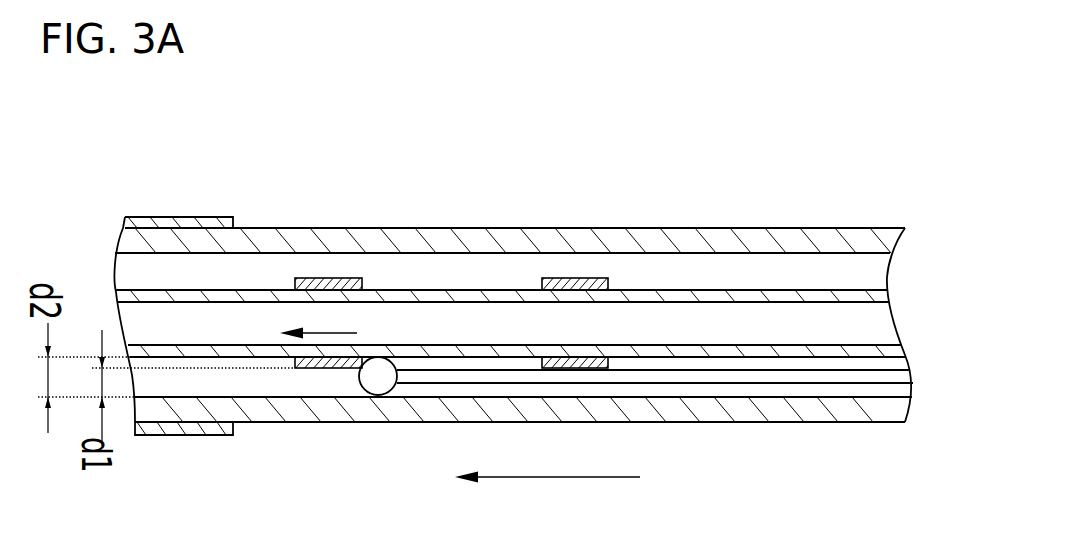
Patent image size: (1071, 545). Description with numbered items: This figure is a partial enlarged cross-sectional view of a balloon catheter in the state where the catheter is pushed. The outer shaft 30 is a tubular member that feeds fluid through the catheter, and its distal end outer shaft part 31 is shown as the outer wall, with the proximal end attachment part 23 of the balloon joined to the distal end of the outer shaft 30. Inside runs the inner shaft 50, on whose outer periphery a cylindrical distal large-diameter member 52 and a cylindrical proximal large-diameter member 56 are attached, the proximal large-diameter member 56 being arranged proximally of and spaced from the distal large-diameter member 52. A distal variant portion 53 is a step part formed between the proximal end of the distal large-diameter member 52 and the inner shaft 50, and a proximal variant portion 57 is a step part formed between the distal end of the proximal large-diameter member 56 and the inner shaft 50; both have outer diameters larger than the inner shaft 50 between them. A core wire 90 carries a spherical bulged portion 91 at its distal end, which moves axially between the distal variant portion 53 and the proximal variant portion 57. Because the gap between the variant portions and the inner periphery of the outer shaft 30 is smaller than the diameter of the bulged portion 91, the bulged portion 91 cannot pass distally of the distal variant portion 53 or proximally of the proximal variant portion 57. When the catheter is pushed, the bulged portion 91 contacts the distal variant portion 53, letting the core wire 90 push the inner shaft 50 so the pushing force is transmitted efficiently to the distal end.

The proximal end attachment part 23 is at (203, 217).
The outer shaft 30 is at (827, 228).
The distal end outer shaft part 31 is at (843, 422).
The inner shaft 50 is at (709, 290).
The distal large-diameter member 52 is at (310, 278).
The distal variant portion 53 is at (365, 287).
The proximal large-diameter member 56 is at (577, 277).
The proximal variant portion 57 is at (540, 282).
The core wire 90 is at (708, 383).
The bulged portion 91 is at (382, 395).